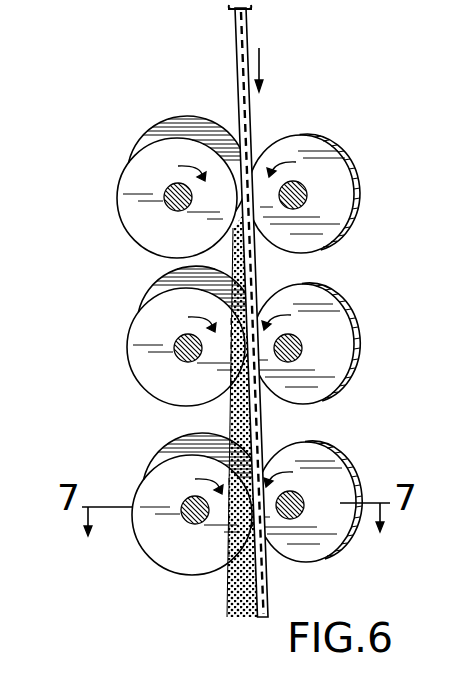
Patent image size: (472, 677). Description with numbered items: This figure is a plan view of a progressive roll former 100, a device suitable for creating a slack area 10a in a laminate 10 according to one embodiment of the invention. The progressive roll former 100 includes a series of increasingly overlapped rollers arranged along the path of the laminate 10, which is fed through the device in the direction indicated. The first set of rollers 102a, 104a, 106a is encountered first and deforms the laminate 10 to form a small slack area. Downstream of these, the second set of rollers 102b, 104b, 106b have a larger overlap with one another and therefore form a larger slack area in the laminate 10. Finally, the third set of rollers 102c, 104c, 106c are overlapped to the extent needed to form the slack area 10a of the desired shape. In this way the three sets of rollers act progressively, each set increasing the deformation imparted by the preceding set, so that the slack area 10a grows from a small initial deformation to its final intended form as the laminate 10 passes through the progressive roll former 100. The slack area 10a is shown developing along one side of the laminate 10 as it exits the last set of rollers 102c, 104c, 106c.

The laminate 10 is at (211, 311).
The slack area 10a is at (207, 426).
The progressive roll former 100 is at (410, 87).
The roller of first set of rollers 102a is at (336, 193).
The roller of second set of rollers 102b is at (334, 343).
The roller of third set of rollers 102c is at (324, 514).
The roller of first set of rollers 104a is at (147, 198).
The roller of second set of rollers 104b is at (151, 347).
The roller of third set of rollers 104c is at (171, 523).
The roller of first set of rollers 106a is at (180, 153).
The roller of second set of rollers 106b is at (173, 313).
The roller of third set of rollers 106c is at (176, 478).